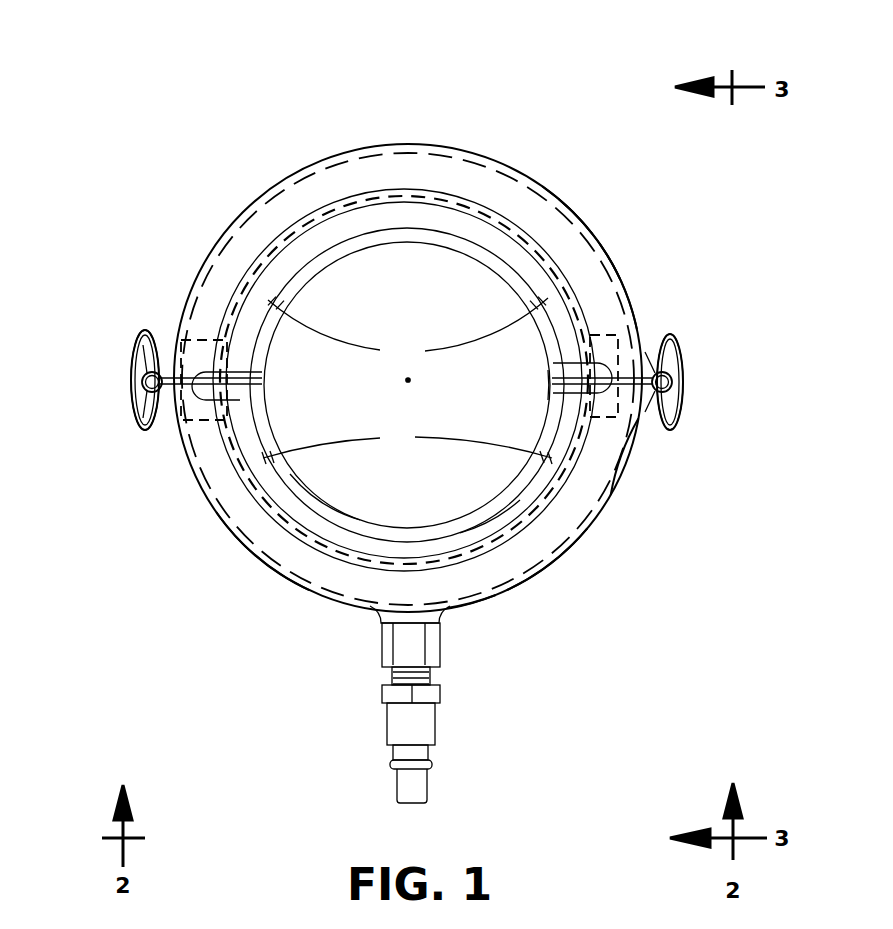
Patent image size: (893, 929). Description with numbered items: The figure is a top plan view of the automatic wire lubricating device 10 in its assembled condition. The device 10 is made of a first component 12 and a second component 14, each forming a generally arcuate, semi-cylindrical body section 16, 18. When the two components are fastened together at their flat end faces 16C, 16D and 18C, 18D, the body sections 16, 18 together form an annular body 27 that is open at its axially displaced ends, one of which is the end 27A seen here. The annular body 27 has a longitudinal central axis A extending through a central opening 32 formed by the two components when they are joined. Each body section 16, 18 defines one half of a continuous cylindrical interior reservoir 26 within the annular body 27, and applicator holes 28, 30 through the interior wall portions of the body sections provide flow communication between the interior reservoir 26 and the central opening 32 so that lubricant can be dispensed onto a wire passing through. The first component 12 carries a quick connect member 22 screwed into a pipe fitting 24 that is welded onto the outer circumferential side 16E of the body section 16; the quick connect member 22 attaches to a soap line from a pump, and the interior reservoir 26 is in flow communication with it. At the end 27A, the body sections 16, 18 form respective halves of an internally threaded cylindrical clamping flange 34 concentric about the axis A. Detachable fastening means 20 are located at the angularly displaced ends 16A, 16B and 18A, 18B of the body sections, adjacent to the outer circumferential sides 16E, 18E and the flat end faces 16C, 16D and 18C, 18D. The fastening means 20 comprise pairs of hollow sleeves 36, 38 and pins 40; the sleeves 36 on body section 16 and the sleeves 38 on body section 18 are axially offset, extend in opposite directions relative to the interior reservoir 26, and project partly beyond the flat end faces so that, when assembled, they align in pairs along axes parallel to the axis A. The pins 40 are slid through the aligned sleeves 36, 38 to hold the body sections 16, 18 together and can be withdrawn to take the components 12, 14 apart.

The automatic wire lubricating device 10 is at (700, 251).
The first component 12 is at (553, 566).
The second component 14 is at (600, 232).
The body section 16 is at (257, 566).
The angularly displaced end 16A is at (185, 429).
The angularly displaced end 16B is at (633, 452).
The flat end face 16C is at (222, 404).
The flat end face 16D is at (338, 510).
The outer circumferential side 16E is at (466, 601).
The body section 18 is at (470, 153).
The angularly displaced end 18A is at (181, 338).
The angularly displaced end 18B is at (640, 308).
The flat end face 18C is at (262, 372).
The flat end face 18D is at (330, 265).
The outer circumferential side 18E is at (576, 206).
The detachable fastening means 20 is at (128, 326).
The quick connect member 22 is at (390, 747).
The pipe fitting 24 is at (382, 650).
The interior reservoir 26 is at (383, 533).
The annular body 27 is at (305, 162).
The axially displaced end 27A is at (387, 188).
The applicator hole 28 is at (407, 446).
The applicator hole 30 is at (408, 332).
The central opening 32 is at (445, 321).
The clamping flange 34 is at (488, 523).
The sleeves 36 is at (672, 387).
The sleeves 38 is at (142, 383).
The pins 40 is at (138, 367).
The longitudinal central axis A is at (410, 381).